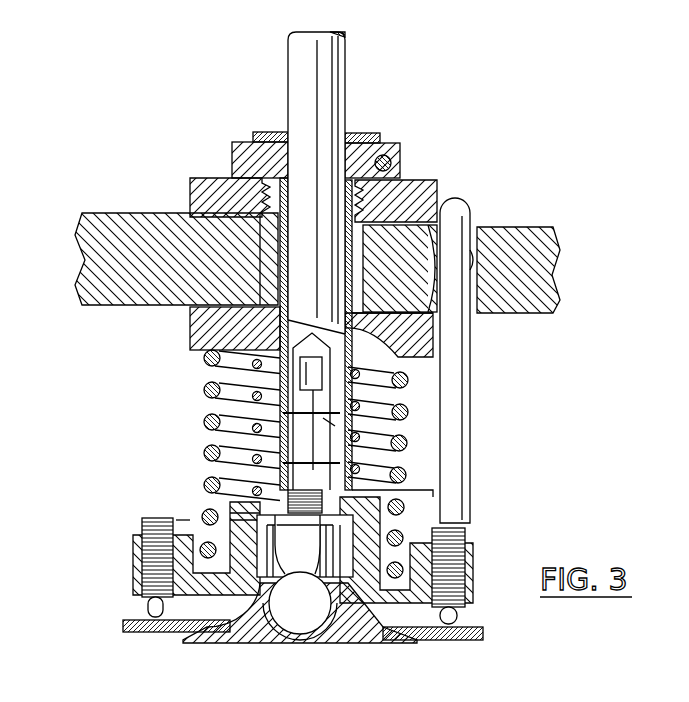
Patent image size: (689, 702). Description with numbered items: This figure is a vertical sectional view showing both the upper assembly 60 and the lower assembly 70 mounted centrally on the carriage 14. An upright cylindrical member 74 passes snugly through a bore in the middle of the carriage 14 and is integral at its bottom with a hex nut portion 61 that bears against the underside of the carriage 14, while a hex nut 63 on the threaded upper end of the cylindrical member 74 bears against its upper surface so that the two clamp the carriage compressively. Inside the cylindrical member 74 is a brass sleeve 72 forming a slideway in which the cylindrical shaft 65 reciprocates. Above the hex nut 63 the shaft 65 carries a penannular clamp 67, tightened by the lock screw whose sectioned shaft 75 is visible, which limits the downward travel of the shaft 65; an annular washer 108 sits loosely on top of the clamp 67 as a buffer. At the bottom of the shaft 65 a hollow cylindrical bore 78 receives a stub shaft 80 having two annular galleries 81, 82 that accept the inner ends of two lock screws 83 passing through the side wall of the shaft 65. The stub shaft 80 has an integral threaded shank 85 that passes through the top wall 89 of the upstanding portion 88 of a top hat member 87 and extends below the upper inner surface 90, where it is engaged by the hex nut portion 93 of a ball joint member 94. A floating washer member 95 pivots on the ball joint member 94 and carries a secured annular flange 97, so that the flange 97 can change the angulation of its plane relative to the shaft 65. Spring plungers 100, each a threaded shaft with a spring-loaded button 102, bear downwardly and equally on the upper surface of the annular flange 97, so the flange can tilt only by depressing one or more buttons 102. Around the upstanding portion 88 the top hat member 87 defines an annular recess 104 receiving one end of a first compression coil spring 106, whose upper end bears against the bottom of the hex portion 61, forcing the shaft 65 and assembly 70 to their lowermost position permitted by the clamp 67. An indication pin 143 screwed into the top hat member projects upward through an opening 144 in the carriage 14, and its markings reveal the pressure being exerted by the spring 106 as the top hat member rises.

The carriage 14 is at (541, 246).
The assembly 60 is at (470, 204).
The hex nut portion 61 is at (196, 330).
The hex nut 63 is at (416, 190).
The shaft 65 is at (333, 82).
The penannular clamp 67 is at (238, 158).
The assembly 70 is at (99, 445).
The brass sleeve 72 is at (384, 357).
The cylindrical member 74 is at (267, 260).
The sectioned shaft 75 is at (397, 148).
The hollow cylindrical bore 78 is at (353, 466).
The stub shaft 80 is at (300, 443).
The annular gallery 81 is at (335, 426).
The annular gallery 82 is at (368, 497).
The lock screws 83 is at (335, 413).
The threaded shank 85 is at (250, 521).
The top hat member 87 is at (178, 522).
The upstanding portion 88 is at (366, 518).
The top wall 89 is at (253, 595).
The upper inner surface 90 is at (333, 546).
The hex nut portion 93 is at (305, 546).
The ball joint member 94 is at (303, 608).
The floating washer member 95 is at (357, 632).
The annular flange 97 is at (460, 640).
The spring plungers 100 is at (142, 527).
The spring-loaded button 102 is at (458, 617).
The annular recess 104 is at (402, 557).
The first compression coil spring 106 is at (205, 364).
The annular washer 108 is at (357, 133).
The indication pin 143 is at (466, 378).
The opening 144 is at (480, 243).